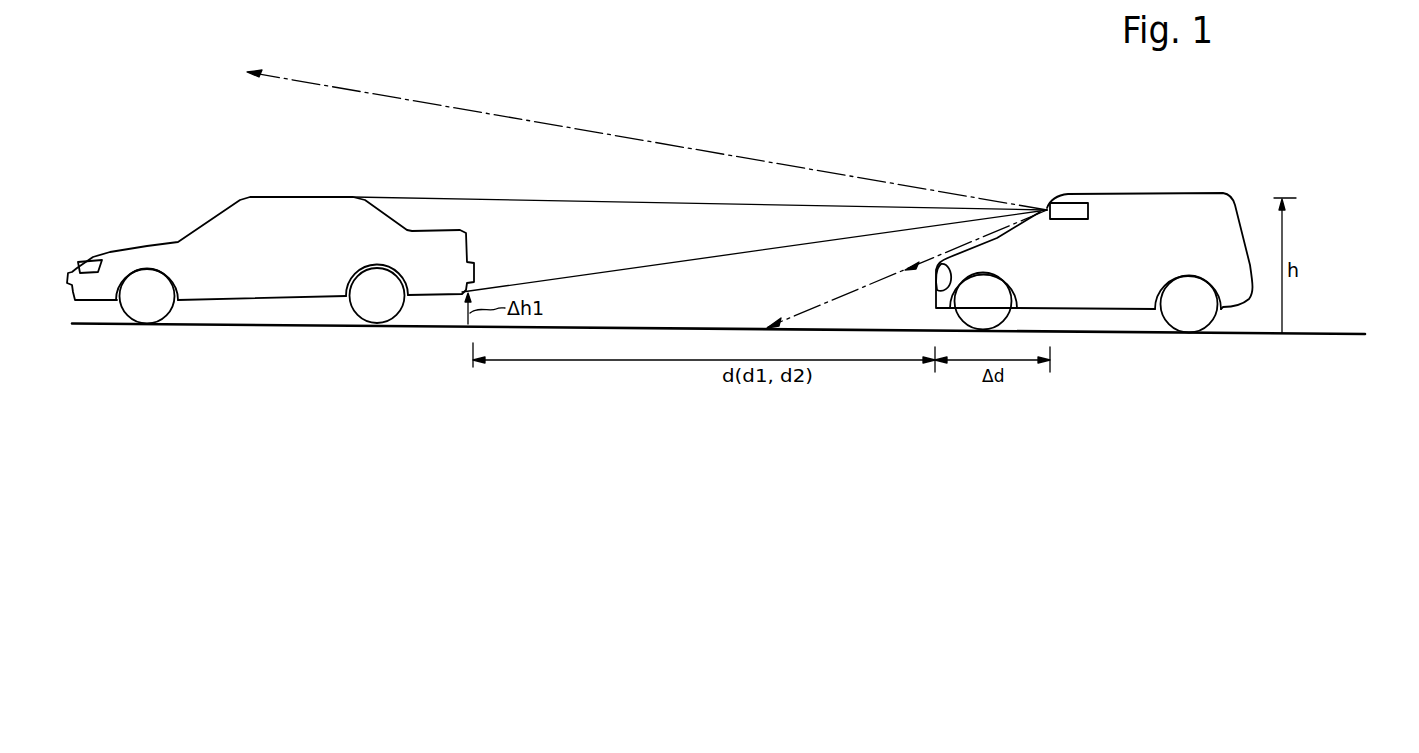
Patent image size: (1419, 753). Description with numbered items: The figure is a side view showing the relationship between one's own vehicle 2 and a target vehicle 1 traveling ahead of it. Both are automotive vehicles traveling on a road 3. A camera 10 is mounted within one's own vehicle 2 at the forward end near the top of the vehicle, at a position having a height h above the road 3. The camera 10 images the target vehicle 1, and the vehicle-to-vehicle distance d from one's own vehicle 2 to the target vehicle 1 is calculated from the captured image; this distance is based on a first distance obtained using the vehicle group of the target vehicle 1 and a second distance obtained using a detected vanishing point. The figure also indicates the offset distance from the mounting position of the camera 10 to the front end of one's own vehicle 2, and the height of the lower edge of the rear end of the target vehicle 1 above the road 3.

The target vehicle 1 is at (432, 228).
The own vehicle 2 is at (1242, 220).
The road 3 is at (1312, 334).
The camera 10 is at (1073, 209).